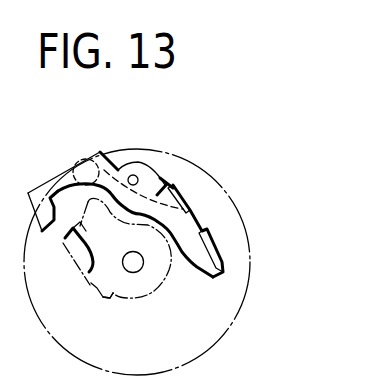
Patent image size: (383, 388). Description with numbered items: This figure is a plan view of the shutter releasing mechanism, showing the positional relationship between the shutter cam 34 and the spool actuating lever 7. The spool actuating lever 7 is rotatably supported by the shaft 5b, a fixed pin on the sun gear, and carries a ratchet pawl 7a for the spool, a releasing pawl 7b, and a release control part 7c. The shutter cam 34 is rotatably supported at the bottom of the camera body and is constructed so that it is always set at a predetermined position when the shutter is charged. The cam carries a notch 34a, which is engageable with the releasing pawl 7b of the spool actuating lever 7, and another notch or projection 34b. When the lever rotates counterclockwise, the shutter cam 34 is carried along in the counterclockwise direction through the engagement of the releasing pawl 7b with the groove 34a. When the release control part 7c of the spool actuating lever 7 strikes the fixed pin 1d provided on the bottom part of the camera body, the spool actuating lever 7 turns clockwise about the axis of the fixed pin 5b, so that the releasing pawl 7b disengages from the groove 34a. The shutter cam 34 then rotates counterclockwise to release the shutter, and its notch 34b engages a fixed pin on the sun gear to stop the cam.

The fixed pin 1d is at (84, 162).
The shaft 5b is at (133, 175).
The spool actuating lever 7 is at (167, 183).
The ratchet pawl 7a is at (213, 245).
The releasing pawl 7b is at (43, 231).
The release control part 7c is at (100, 152).
The shutter cam 34 is at (99, 289).
The notch 34a is at (114, 267).
The notch 34b is at (113, 298).